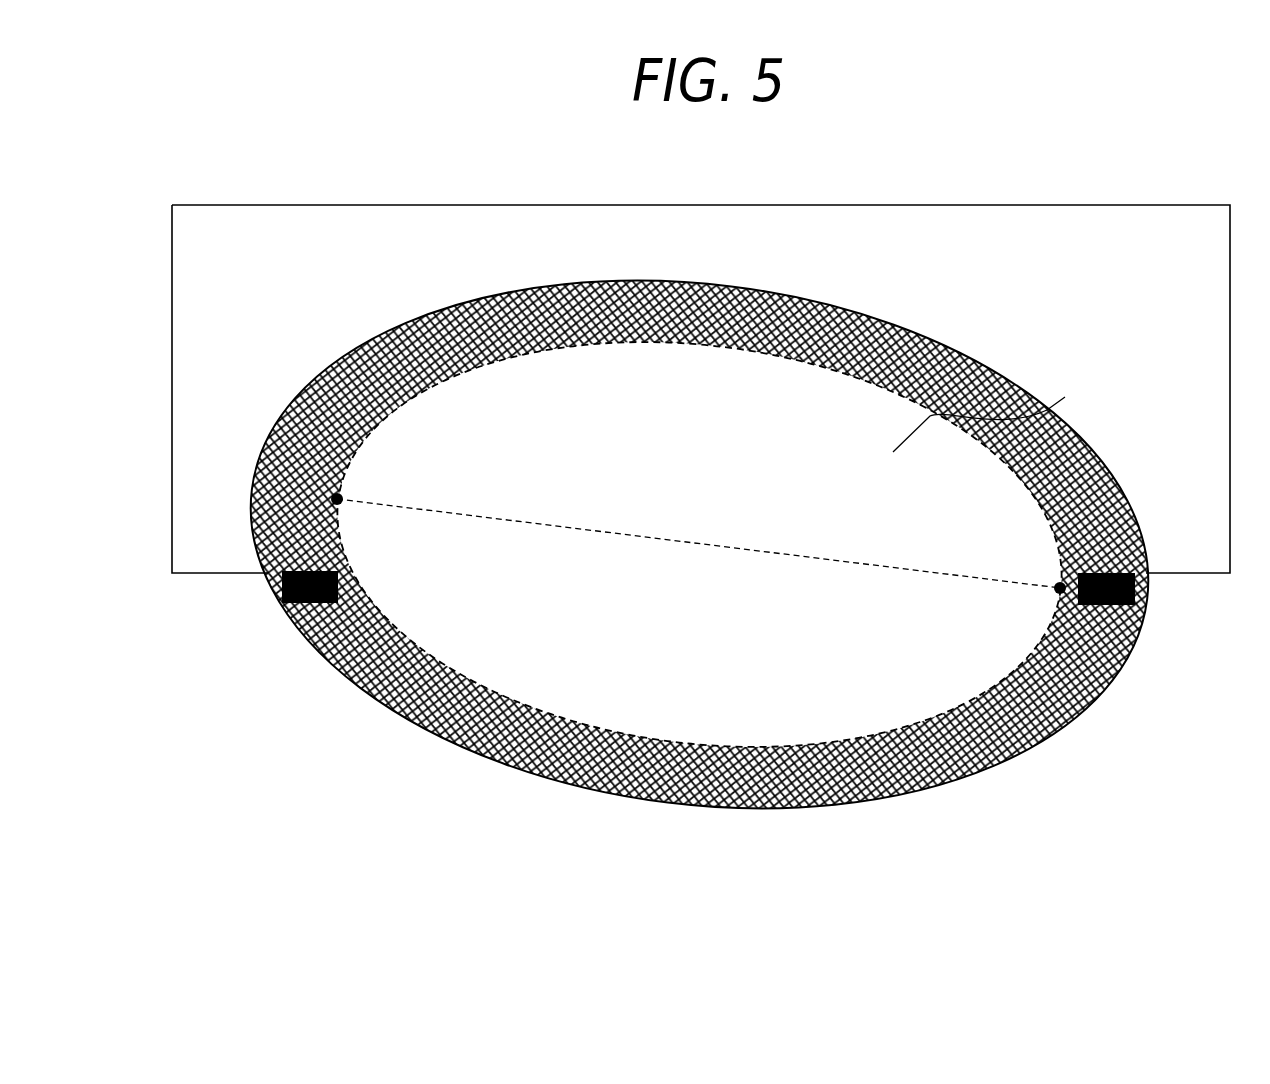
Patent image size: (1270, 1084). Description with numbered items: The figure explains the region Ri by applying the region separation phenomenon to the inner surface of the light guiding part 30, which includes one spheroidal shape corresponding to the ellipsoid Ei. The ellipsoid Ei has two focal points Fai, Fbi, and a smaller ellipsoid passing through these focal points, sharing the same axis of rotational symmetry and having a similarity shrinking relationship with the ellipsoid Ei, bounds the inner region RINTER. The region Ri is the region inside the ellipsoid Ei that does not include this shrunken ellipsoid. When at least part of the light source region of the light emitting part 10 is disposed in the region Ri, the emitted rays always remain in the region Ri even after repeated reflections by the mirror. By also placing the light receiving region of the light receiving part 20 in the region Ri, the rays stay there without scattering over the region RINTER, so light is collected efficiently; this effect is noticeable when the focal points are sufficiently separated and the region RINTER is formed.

The light emitting part 10 is at (308, 608).
The light receiving part 20 is at (1137, 588).
The light guiding part 30 is at (1022, 228).
The region Ri is at (885, 323).
The region RINTER is at (1023, 418).
The focal point Fai is at (340, 496).
The focal point Fbi is at (1057, 582).
The ellipsoid Ei is at (1077, 717).